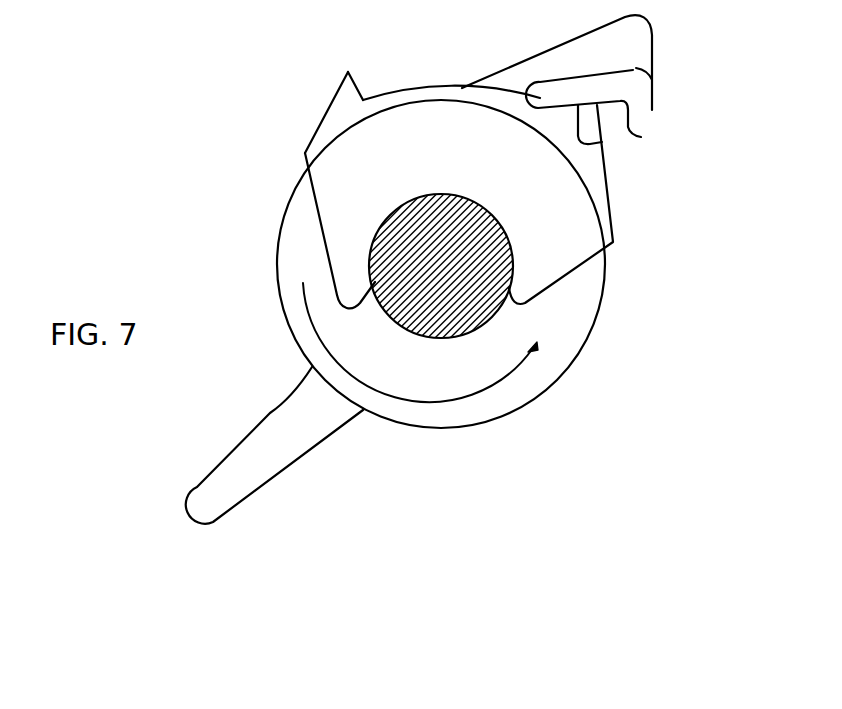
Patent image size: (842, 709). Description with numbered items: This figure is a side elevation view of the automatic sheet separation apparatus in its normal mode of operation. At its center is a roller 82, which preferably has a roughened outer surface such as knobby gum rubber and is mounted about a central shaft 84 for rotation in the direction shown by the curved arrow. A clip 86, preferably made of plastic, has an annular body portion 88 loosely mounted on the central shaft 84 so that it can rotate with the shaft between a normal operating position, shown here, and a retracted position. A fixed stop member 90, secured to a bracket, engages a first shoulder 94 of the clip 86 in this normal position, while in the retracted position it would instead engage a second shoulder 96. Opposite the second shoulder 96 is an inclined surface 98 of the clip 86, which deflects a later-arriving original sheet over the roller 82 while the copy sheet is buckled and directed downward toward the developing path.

The roller 82 is at (577, 360).
The central shaft 84 is at (437, 340).
The clip 86 is at (427, 76).
The annular body portion 88 is at (363, 178).
The fixed stop member 90 is at (636, 68).
The first shoulder 94 is at (602, 142).
The second shoulder 96 is at (363, 95).
The inclined surface 98 is at (313, 128).